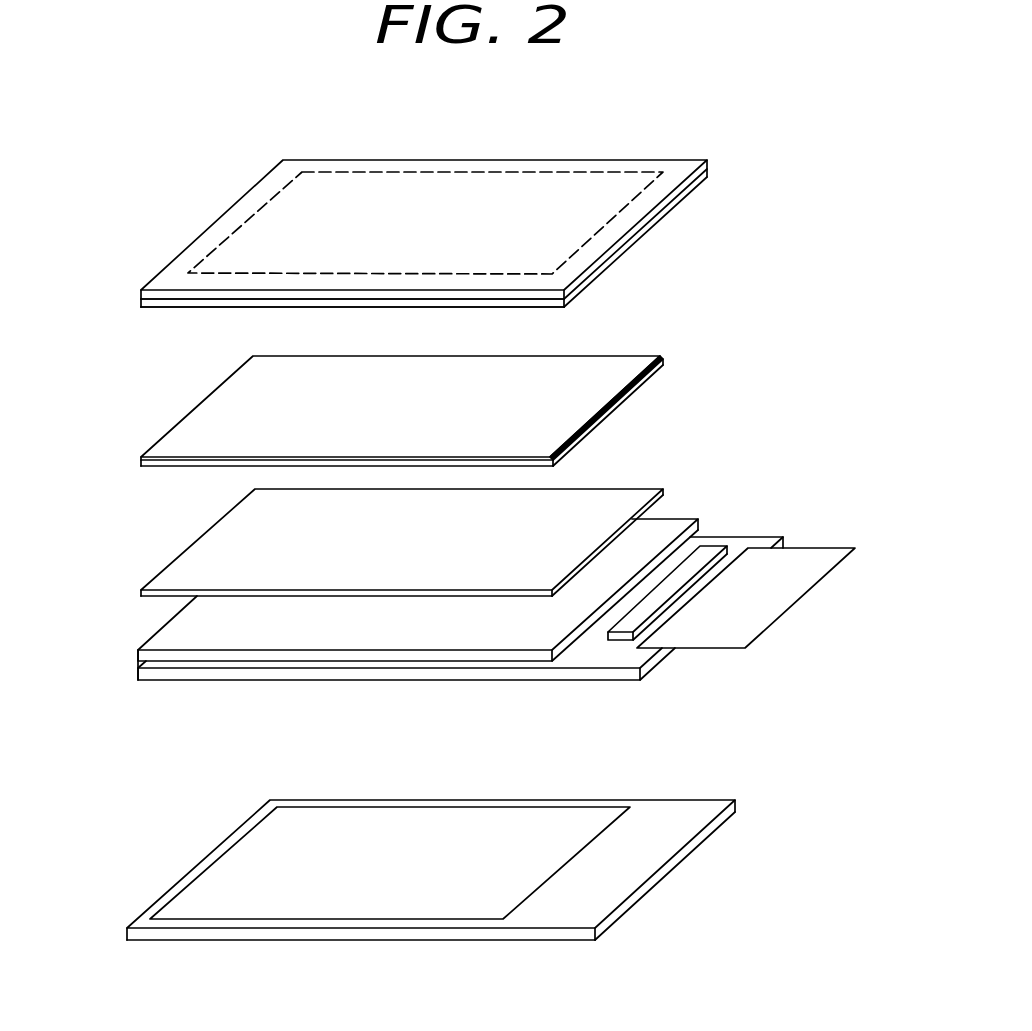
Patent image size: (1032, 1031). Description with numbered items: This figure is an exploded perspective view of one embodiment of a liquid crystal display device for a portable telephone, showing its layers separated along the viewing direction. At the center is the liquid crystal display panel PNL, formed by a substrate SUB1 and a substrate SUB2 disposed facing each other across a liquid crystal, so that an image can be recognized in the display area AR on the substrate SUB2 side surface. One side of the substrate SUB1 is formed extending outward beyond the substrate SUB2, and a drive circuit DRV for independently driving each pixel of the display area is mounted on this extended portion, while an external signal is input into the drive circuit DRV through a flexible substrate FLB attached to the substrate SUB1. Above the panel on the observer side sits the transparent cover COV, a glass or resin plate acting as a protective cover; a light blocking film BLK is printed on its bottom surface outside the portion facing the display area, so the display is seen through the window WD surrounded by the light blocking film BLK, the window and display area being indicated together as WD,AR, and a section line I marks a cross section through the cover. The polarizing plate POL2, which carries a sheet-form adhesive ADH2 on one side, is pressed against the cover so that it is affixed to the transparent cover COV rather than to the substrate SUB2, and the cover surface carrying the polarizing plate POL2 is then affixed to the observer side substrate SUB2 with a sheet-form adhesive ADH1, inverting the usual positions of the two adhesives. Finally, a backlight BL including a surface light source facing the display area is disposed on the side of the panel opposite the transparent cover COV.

The transparent cover COV is at (240, 166).
The light blocking film BLK is at (207, 308).
The window and display area WD,AR is at (479, 174).
The window WD is at (479, 174).
The display area AR is at (630, 198).
The section line I- I is at (400, 170).
The adhesive ADH2 is at (598, 375).
The polarizing plate POL2 is at (583, 443).
The adhesive ADH1 is at (608, 497).
The substrate SUB2 is at (467, 655).
The substrate SUB1 is at (348, 677).
The drive circuit DRV is at (707, 548).
The flexible substrate FLB is at (775, 600).
The liquid crystal display panel PNL is at (113, 678).
The backlight BL is at (750, 788).